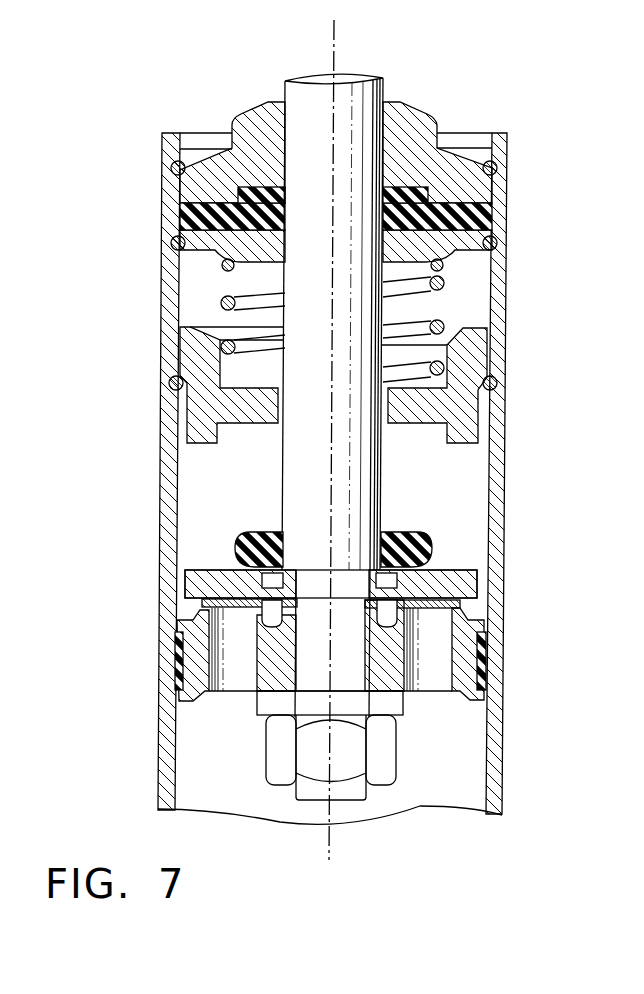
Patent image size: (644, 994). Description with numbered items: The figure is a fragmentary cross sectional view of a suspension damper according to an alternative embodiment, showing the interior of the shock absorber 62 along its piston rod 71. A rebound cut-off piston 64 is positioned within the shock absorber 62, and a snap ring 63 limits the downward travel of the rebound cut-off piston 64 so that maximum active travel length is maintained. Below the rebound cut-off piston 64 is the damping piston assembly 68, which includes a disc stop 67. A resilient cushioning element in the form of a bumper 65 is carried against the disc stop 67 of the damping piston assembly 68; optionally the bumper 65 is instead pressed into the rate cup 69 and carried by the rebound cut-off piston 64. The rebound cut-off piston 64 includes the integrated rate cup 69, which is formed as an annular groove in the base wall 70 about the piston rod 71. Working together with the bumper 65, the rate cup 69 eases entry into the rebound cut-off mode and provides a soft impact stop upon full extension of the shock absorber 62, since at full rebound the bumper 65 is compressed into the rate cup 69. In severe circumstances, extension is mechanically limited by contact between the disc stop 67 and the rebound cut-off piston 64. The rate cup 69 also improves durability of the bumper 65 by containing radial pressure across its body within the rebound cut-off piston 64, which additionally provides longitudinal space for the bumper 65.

The shock absorber 62 is at (518, 180).
The snap ring 63 is at (498, 385).
The rebound cut-off piston 64 is at (386, 413).
The bumper 65 is at (432, 552).
The disc stop 67 is at (478, 581).
The damping piston assembly 68 is at (491, 623).
The rate cup 69 is at (258, 425).
The base wall 70 is at (418, 418).
The piston rod 71 is at (385, 92).